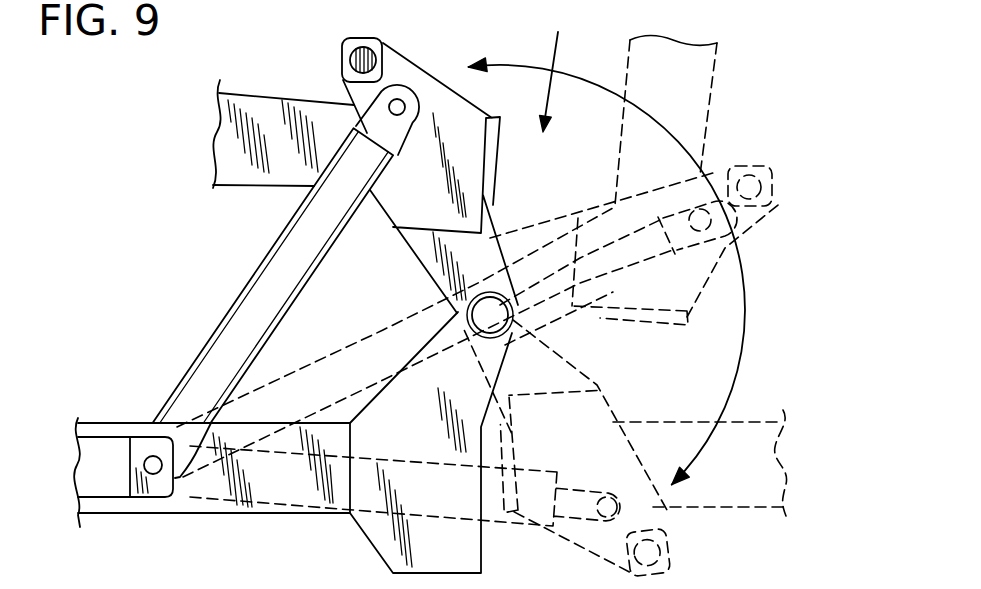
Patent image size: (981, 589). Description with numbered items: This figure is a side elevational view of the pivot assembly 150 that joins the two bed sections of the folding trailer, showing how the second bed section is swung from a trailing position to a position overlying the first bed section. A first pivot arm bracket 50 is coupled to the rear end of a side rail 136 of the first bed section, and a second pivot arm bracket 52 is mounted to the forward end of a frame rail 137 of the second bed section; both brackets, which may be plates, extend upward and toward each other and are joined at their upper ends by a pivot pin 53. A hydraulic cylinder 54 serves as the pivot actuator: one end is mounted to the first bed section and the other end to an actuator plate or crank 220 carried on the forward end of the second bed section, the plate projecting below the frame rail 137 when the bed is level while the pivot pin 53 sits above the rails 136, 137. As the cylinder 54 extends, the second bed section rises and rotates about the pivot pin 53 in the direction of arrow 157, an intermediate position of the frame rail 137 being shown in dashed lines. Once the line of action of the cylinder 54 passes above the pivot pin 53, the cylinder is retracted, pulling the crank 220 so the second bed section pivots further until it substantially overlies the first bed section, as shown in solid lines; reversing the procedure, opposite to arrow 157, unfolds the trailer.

The first pivot arm bracket 50 is at (415, 356).
The second pivot arm bracket 52 is at (493, 240).
The pivot pin 53 is at (490, 296).
The hydraulic cylinder 54 is at (224, 339).
The side rail 136 is at (143, 507).
The frame rail 137 is at (248, 93).
The pivot assembly 150 is at (591, 297).
The arrow 157 is at (745, 322).
The actuator plate or crank 220 is at (428, 72).